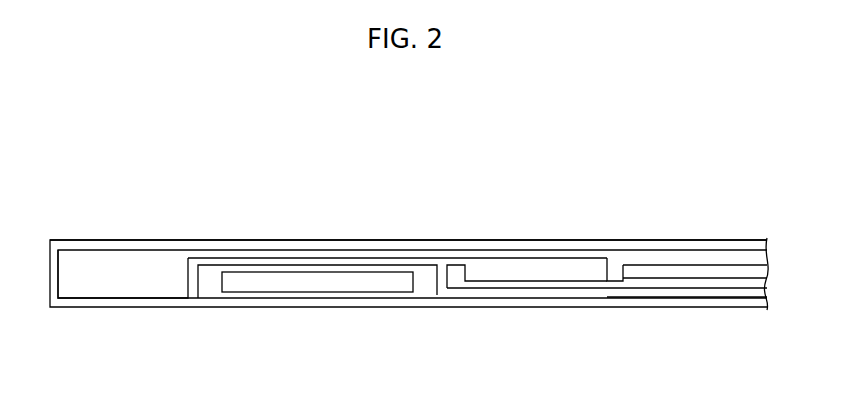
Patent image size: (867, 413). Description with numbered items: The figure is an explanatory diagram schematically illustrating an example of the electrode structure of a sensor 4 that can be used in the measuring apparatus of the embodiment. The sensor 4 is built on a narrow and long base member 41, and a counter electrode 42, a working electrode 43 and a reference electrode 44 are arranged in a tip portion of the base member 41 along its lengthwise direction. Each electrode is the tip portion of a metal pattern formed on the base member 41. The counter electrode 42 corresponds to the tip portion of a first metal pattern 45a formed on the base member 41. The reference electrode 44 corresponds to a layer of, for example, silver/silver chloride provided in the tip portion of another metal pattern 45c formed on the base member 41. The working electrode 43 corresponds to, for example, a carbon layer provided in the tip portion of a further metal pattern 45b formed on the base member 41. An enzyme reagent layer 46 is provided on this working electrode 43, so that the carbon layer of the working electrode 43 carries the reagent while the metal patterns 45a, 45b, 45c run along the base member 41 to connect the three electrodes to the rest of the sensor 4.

The sensor 4 is at (577, 201).
The base member 41 is at (230, 242).
The counter electrode 42 is at (120, 284).
The working electrode 43 is at (285, 283).
The enzyme reagent layer 46 is at (285, 283).
The reference electrode 44 is at (534, 277).
The metal pattern 45a is at (692, 248).
The metal pattern 45b is at (703, 292).
The metal pattern 45c is at (662, 275).